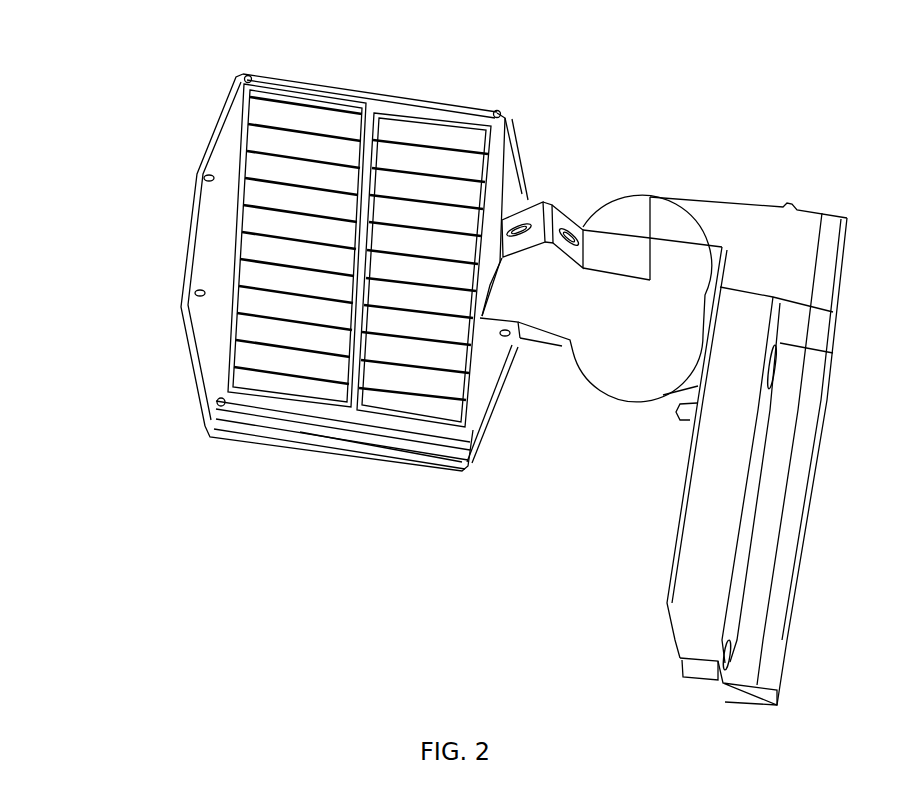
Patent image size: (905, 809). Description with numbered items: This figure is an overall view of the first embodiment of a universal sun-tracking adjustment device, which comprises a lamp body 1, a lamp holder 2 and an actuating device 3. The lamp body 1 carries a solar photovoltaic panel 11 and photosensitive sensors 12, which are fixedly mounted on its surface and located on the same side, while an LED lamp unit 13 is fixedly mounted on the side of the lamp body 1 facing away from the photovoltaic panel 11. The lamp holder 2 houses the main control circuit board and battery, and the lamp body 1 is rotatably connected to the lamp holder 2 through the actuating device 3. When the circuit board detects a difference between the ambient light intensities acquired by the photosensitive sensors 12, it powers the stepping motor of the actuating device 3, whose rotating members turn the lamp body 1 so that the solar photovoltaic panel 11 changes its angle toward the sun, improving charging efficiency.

The lamp body 1 is at (215, 232).
The solar photovoltaic panel 11 is at (400, 240).
The photosensitive sensor 12 is at (540, 197).
The lamp holder 2 is at (653, 300).
The actuating device 3 is at (788, 242).
The LED lamp unit 13 is at (430, 465).